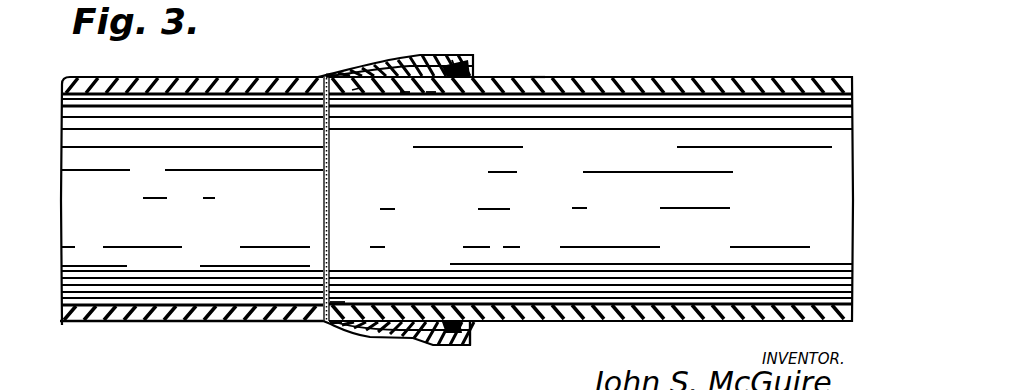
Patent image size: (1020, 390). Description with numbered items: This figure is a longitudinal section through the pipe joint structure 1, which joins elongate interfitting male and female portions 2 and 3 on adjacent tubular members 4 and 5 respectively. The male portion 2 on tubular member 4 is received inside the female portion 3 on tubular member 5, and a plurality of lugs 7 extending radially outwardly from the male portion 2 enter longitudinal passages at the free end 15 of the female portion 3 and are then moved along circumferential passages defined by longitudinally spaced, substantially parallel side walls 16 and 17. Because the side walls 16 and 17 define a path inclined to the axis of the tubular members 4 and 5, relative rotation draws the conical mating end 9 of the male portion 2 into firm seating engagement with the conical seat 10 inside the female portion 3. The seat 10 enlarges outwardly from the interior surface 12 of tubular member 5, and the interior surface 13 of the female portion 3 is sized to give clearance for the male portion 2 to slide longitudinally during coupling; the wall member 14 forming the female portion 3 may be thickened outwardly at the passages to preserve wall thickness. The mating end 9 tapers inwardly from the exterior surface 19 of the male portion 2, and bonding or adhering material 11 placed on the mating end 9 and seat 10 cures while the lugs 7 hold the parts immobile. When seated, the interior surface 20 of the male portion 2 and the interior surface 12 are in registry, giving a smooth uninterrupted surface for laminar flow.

The joint structure 1 is at (408, 195).
The male portion 2 is at (546, 76).
The female portion 3 is at (386, 56).
The tubular member 4 is at (848, 130).
The tubular member 5 is at (91, 79).
The lug 7 is at (470, 333).
The mating end 9 is at (335, 300).
The seat 10 is at (350, 84).
The bonding or adhering material 11 is at (358, 86).
The interior surface 12 is at (279, 96).
The interior surface 13 is at (430, 92).
The wall member 14 is at (398, 60).
The free end 15 is at (472, 346).
The side wall 16 is at (455, 74).
The side wall 17 is at (462, 67).
The exterior surface 19 is at (404, 90).
The interior surface 20 is at (356, 92).